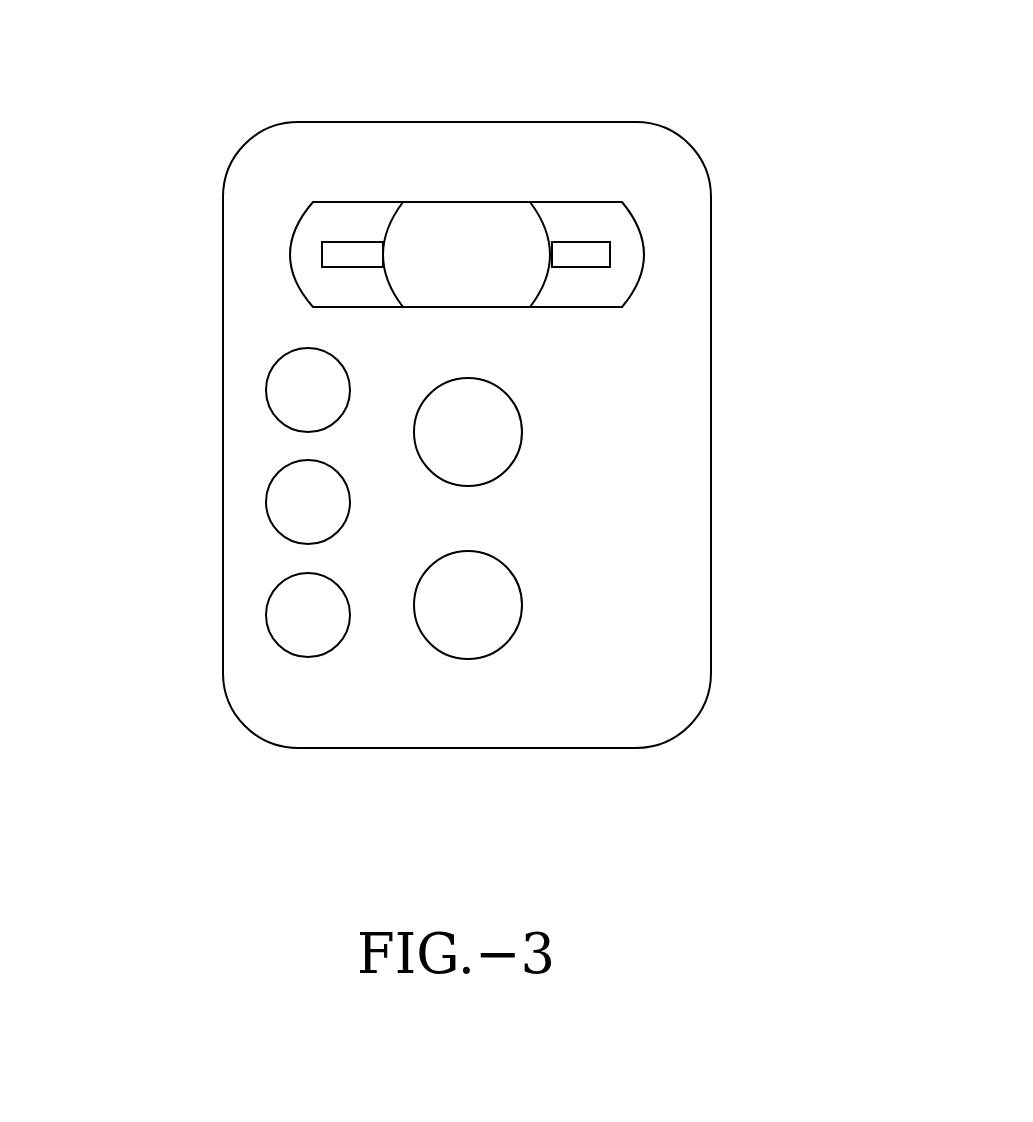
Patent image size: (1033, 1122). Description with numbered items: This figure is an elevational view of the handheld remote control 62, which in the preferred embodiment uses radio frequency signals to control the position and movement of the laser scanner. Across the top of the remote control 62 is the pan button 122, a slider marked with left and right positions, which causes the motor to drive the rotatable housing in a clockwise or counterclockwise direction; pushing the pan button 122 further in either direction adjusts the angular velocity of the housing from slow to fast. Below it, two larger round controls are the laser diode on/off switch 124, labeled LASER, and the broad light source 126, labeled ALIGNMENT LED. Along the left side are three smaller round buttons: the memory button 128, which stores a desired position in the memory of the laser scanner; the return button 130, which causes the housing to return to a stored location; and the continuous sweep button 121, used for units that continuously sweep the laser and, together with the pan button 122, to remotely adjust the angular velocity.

The remote control 62 is at (692, 751).
The pan button 122 is at (502, 223).
The laser diode on/off switch 124 is at (510, 432).
The broad light source 126 is at (505, 603).
The memory button 128 is at (263, 393).
The return button 130 is at (267, 510).
The continuous sweep button 121 is at (265, 628).